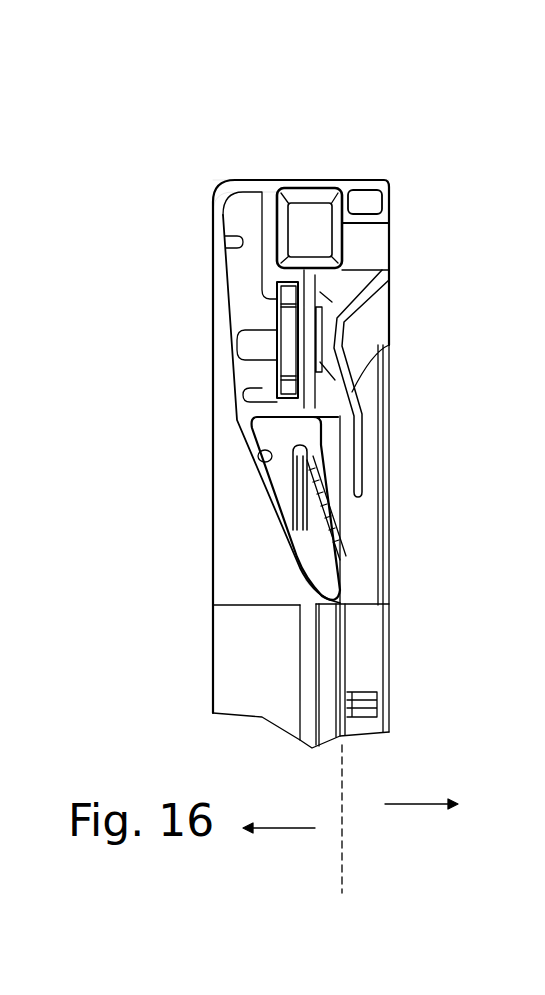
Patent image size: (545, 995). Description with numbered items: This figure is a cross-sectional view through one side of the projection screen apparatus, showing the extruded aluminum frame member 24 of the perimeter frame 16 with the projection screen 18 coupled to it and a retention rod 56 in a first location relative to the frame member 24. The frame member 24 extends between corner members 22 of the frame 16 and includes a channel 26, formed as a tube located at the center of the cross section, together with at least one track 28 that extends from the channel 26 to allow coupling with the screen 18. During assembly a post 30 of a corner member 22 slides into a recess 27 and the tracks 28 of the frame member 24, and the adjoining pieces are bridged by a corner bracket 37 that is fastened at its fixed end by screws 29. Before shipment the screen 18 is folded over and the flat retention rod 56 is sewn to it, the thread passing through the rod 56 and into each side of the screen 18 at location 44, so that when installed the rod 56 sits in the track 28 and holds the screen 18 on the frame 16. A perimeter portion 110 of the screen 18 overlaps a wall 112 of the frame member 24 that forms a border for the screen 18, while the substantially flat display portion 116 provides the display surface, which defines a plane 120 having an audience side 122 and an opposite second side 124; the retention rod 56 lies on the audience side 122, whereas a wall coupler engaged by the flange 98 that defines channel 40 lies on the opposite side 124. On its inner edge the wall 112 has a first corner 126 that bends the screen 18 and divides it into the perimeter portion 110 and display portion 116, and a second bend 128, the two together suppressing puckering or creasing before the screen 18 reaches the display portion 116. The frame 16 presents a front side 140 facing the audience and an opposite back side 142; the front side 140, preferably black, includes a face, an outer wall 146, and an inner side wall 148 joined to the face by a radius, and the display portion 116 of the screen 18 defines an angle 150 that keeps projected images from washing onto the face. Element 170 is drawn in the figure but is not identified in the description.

The perimeter frame 16 is at (302, 97).
The projection screen 18 is at (387, 534).
The corner member 22 is at (230, 556).
The frame member 24 is at (353, 162).
The channel 26 is at (225, 243).
The recess 27 is at (278, 232).
The track 28 is at (270, 460).
The screw 29 is at (257, 338).
The post 30 is at (290, 195).
The corner bracket 37 is at (290, 373).
The channel 40 is at (362, 247).
The location 44 is at (365, 430).
The retention rod 56 is at (338, 572).
The flange 98 is at (377, 230).
The perimeter portion 110 is at (310, 470).
The wall 112 is at (342, 545).
The display portion 116 is at (337, 673).
The plane 120 is at (342, 847).
The audience side 122 is at (279, 846).
The second side 124 is at (421, 821).
The first corner 126 is at (324, 643).
The second bend 128 is at (330, 487).
The front side 140 is at (205, 200).
The back side 142 is at (398, 188).
The outer wall 146 is at (305, 186).
The inner side wall 148 is at (297, 600).
The angle 150 is at (303, 640).
The flexible member 170 is at (390, 305).